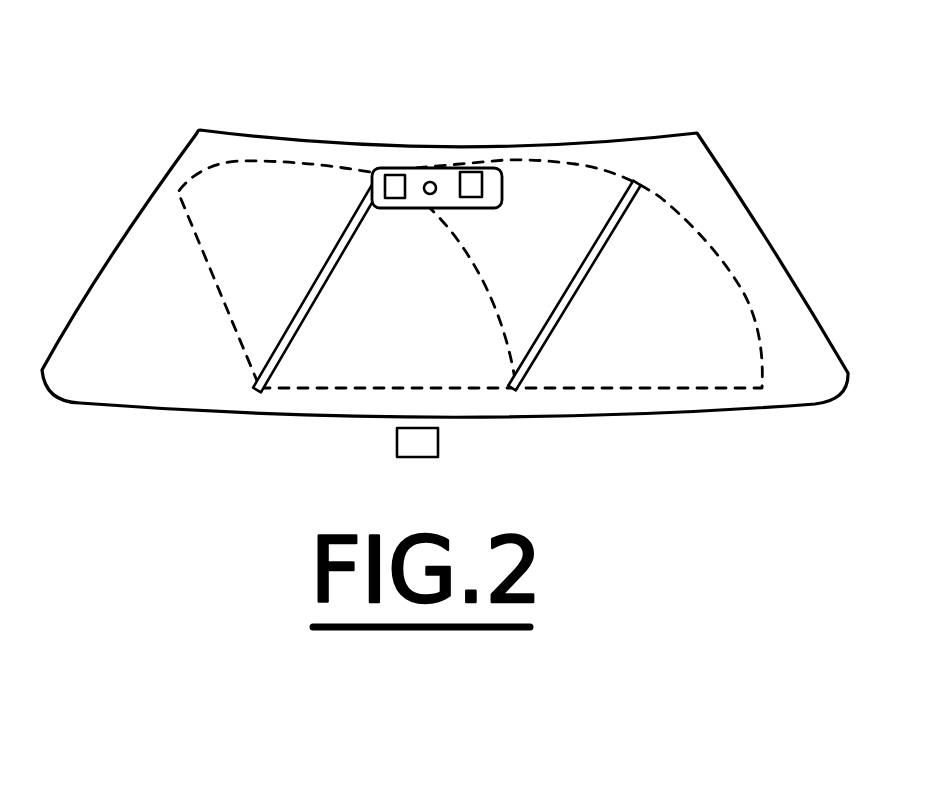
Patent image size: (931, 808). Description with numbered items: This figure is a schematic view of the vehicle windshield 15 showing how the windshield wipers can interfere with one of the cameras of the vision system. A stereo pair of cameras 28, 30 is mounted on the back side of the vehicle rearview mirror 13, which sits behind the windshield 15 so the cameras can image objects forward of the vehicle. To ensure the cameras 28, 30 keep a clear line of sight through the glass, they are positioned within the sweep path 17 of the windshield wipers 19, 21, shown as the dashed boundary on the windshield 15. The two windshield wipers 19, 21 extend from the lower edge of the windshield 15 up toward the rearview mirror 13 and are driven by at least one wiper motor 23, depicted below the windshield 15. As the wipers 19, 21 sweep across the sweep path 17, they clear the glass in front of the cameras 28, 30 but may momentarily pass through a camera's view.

The vehicle rearview mirror 13 is at (480, 115).
The windshield 15 is at (697, 172).
The sweep path 17 is at (717, 253).
The windshield wiper 19 is at (312, 312).
The windshield wiper 21 is at (560, 315).
The wiper motor 23 is at (438, 442).
The camera 28 is at (390, 176).
The camera 30 is at (455, 175).